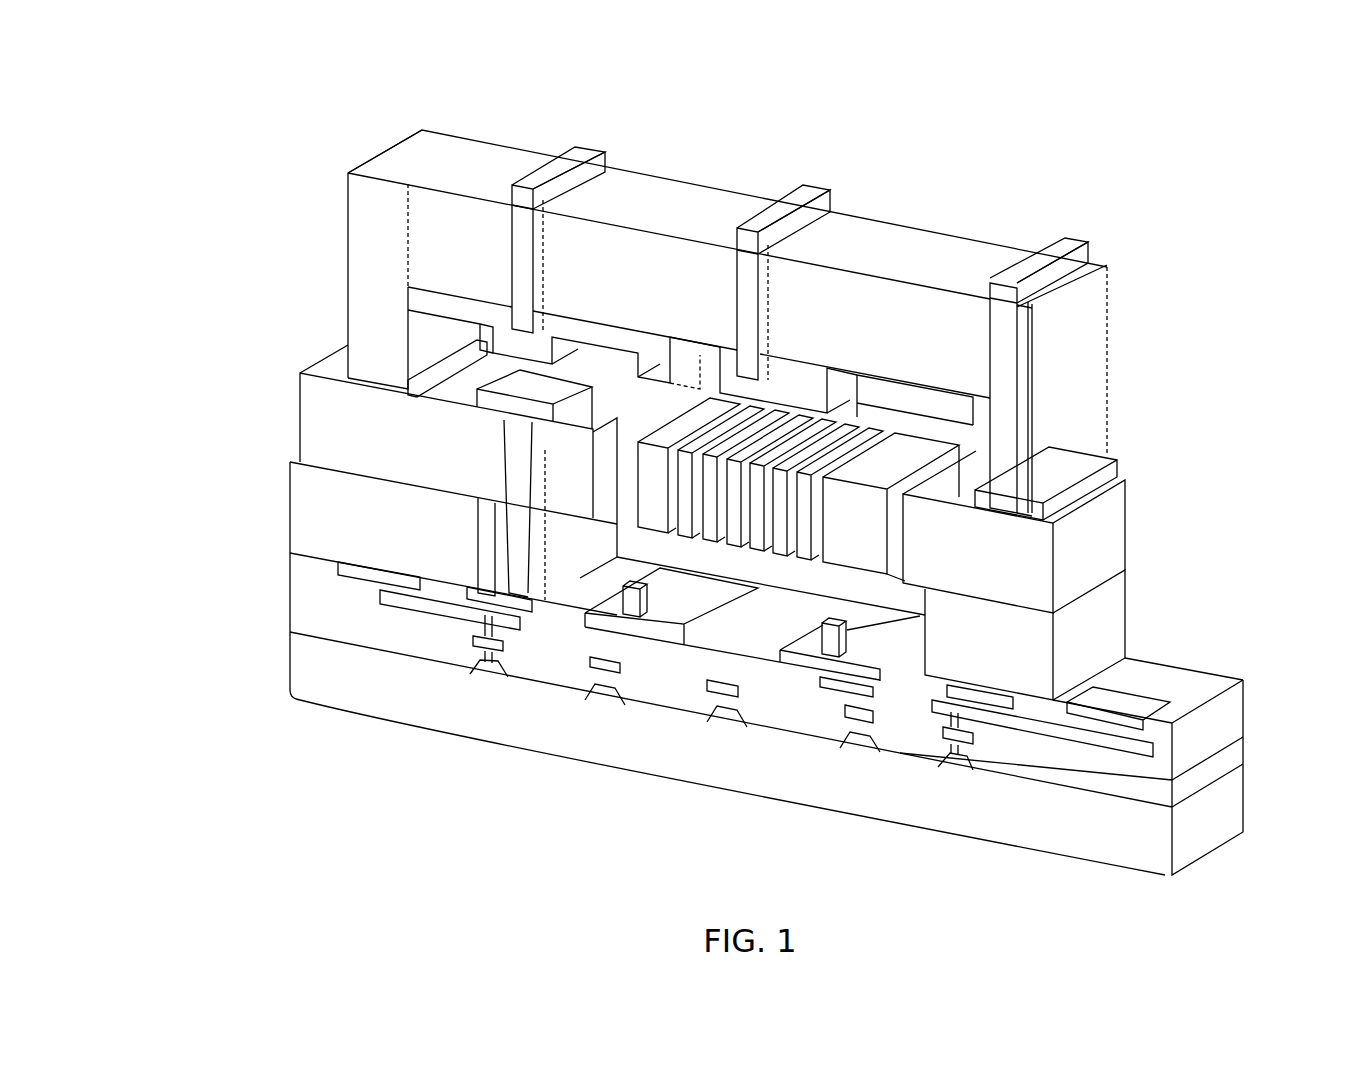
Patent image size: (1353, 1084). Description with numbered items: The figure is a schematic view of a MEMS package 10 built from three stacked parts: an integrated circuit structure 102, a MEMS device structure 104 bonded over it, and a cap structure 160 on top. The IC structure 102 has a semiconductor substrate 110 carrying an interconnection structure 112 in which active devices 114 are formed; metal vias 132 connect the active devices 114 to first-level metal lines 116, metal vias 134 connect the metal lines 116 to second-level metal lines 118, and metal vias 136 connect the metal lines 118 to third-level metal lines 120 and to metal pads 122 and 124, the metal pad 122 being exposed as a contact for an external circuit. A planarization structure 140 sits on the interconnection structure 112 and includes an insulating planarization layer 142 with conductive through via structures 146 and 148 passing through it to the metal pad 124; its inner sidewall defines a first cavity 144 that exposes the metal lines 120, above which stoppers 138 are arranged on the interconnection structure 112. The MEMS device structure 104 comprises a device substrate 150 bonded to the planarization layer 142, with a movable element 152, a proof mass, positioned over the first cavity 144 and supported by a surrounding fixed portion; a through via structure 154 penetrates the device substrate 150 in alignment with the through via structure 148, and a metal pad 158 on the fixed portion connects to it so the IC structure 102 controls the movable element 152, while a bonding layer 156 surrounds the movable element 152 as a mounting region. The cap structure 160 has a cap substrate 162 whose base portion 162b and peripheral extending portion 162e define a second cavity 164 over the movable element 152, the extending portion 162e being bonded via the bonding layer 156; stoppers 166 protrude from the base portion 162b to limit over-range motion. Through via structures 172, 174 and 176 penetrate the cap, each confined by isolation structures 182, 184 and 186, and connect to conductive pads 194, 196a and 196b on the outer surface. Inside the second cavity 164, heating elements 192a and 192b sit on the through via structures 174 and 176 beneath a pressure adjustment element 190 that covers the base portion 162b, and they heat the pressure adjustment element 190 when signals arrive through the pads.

The MEMS package 10 is at (308, 104).
The integrated circuit (IC) structure 102 is at (146, 437).
The MEMS device structure 104 is at (146, 330).
The semiconductor substrate 110 is at (1207, 812).
The interconnection structure 112 is at (207, 535).
The active devices 114 is at (990, 773).
The metal lines 116 is at (1187, 790).
The metal lines 118 is at (1177, 760).
The metal lines 120 is at (378, 577).
The metal pad 122 is at (1170, 742).
The metal pad 124 is at (472, 595).
The metal vias 132 is at (962, 772).
The metal vias 134 is at (480, 634).
The metal vias 136 is at (958, 705).
The stoppers 138 is at (822, 640).
The planarization structure 140 is at (207, 455).
The planarization layer 142 is at (1102, 617).
The first cavity 144 is at (780, 580).
The conductive through via structure 146 is at (487, 512).
The conductive through via structure 148 is at (520, 527).
The device substrate 150 is at (1097, 527).
The movable element 152 is at (778, 415).
The conductive through via structure 154 is at (515, 446).
The bonding layer 156 is at (1097, 473).
The metal pad 158 is at (490, 409).
The cap structure 160 is at (146, 148).
The cap substrate 162 is at (360, 241).
The base portion 162b is at (299, 172).
The extending portion 162e is at (299, 270).
The second cavity 164 is at (891, 417).
The stoppers 166 is at (652, 350).
The through via structure 172 is at (1002, 349).
The through via structure 174 is at (747, 278).
The through via structure 176 is at (522, 230).
The isolation structure 182 is at (1020, 322).
The isolation structure 184 is at (727, 297).
The isolation structure 186 is at (503, 247).
The pressure adjustment element 190 is at (437, 307).
The heating element 192a is at (740, 363).
The heating element 192b is at (518, 320).
The conductive pad 194 is at (1058, 242).
The conductive pad 196a is at (810, 183).
The conductive pad 196b is at (585, 147).